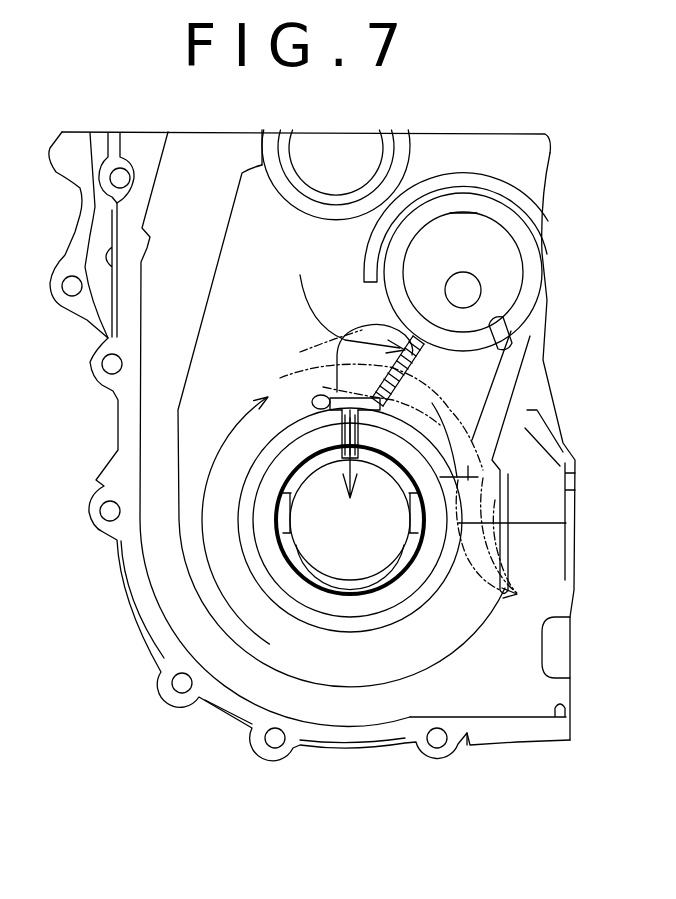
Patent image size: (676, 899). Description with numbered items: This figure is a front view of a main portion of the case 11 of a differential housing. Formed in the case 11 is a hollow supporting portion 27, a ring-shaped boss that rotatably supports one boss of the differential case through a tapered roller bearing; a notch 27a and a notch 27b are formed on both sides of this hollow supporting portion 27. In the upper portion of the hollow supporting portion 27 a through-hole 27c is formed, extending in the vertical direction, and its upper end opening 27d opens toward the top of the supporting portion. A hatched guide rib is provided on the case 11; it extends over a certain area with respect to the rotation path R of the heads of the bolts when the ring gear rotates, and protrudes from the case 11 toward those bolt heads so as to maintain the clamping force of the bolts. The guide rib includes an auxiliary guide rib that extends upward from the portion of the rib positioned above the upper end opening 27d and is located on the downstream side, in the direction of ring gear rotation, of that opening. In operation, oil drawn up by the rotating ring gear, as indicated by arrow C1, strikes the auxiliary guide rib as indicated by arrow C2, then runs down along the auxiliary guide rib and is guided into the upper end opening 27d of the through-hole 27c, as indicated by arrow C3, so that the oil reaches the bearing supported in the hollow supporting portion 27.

The case 11 is at (493, 693).
The hollow supporting portion 27 is at (348, 596).
The notch 27a is at (301, 597).
The notch 27b is at (400, 598).
The through-hole 27c is at (336, 341).
The upper end opening 27d is at (402, 390).
The arrow C1 is at (228, 443).
The arrow C2 is at (344, 300).
The arrow C3 is at (340, 432).
The rotation path R is at (409, 474).